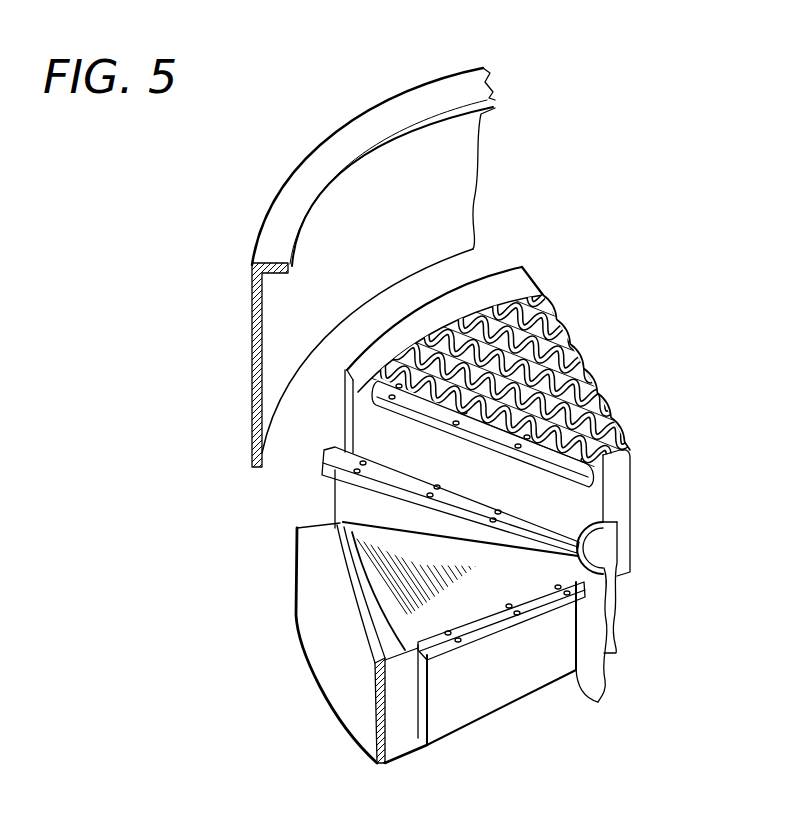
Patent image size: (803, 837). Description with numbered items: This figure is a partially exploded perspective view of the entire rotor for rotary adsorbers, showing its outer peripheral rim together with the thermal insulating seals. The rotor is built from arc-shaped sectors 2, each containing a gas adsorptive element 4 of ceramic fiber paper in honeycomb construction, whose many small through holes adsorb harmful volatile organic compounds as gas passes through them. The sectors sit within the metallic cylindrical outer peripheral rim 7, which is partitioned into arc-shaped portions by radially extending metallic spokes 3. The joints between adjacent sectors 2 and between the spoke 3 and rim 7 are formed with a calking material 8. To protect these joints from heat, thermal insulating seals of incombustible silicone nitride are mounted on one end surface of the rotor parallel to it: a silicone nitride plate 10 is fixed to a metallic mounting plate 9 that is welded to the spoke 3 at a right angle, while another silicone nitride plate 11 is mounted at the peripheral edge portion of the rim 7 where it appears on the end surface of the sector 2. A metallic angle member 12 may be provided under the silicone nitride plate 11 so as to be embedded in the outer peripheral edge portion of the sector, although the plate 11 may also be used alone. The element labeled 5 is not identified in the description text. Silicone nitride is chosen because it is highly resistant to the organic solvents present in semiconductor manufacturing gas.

The arc-shaped sector 2 is at (613, 360).
The spoke 3 is at (348, 498).
The gas adsorptive element 4 is at (547, 328).
The partition plate 5 is at (597, 623).
The outer peripheral rim 7 is at (430, 188).
The calking material 8 is at (343, 410).
The mounting plate 9 is at (540, 530).
The silicone nitride plate 10 is at (430, 410).
The silicone nitride plate 11 is at (452, 97).
The metallic angle member 12 is at (385, 343).